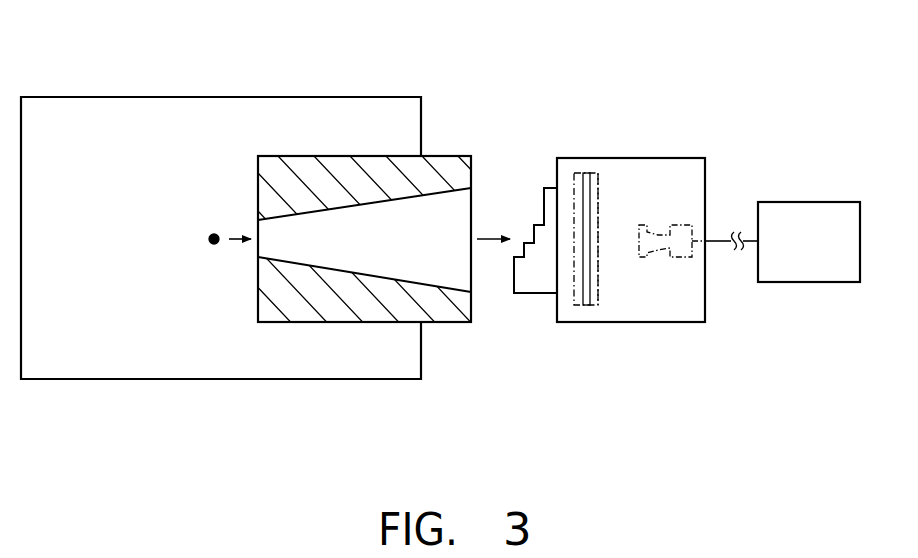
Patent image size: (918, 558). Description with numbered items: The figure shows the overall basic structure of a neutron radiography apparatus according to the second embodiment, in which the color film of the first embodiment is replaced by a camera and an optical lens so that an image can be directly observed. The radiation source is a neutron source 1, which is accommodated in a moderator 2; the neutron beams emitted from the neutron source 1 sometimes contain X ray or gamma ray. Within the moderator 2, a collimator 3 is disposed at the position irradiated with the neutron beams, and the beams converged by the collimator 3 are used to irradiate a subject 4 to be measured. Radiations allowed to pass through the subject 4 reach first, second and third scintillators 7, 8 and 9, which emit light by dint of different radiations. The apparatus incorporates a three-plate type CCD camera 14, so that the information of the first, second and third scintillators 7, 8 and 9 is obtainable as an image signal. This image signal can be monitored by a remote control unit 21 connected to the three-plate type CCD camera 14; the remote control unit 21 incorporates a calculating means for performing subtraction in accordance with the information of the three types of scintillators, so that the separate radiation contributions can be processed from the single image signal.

The neutron source 1 is at (212, 233).
The moderator 2 is at (92, 97).
The collimator 3 is at (435, 172).
The subject 4 is at (543, 202).
The first scintillator 7 is at (572, 188).
The second scintillator 8 is at (586, 306).
The third scintillator 9 is at (600, 187).
The three-plate type CCD camera 14 is at (675, 223).
The remote control unit 21 is at (800, 202).